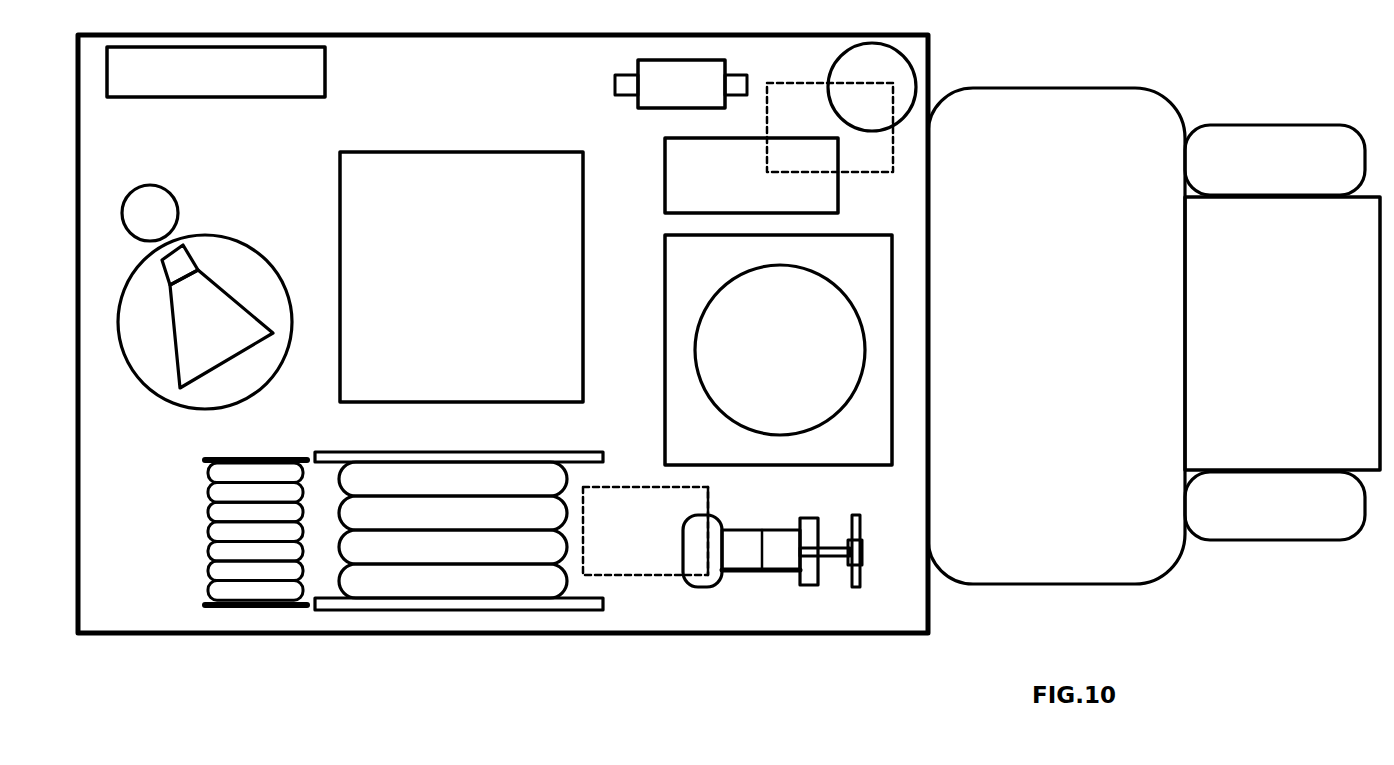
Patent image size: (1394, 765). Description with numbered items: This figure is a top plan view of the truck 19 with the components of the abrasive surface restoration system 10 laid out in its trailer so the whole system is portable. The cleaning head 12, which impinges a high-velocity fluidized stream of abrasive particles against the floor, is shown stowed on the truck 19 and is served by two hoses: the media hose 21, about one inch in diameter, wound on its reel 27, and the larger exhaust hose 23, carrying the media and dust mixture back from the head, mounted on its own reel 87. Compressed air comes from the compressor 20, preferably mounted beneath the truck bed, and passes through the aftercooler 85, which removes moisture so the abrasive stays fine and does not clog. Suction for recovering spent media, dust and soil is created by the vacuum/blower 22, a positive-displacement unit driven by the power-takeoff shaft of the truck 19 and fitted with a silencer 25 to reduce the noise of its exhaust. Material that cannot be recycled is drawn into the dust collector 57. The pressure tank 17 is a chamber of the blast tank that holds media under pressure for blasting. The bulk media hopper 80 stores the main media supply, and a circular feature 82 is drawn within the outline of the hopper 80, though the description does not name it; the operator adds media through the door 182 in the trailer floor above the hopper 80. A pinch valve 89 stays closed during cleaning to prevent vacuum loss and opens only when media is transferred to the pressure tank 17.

The system 10 is at (943, 49).
The cleaning head 12 is at (776, 529).
The pressure tank 17 is at (153, 373).
The truck 19 is at (1162, 115).
The compressor 20 is at (678, 503).
The media hose 21 is at (220, 490).
The vacuum/blower 22 is at (863, 172).
The exhaust hose 23 is at (425, 477).
The silencer 25 is at (845, 63).
The reel 27 is at (252, 458).
The dust collector 57 is at (473, 165).
The bulk media hopper 80 is at (778, 350).
The pump 82 is at (788, 368).
The aftercooler 85 is at (677, 167).
The reel 87 is at (550, 455).
The pinch valve 89 is at (650, 97).
The door 182 is at (308, 79).